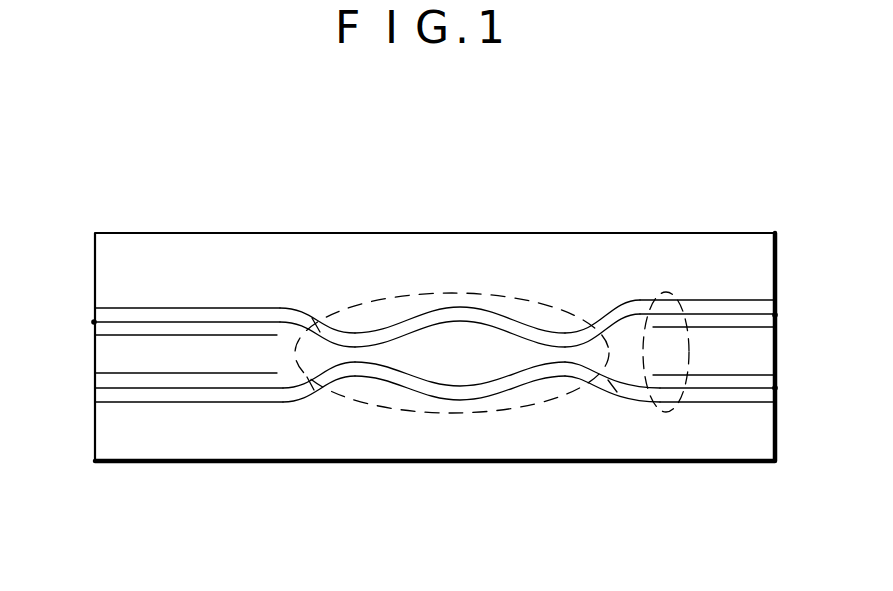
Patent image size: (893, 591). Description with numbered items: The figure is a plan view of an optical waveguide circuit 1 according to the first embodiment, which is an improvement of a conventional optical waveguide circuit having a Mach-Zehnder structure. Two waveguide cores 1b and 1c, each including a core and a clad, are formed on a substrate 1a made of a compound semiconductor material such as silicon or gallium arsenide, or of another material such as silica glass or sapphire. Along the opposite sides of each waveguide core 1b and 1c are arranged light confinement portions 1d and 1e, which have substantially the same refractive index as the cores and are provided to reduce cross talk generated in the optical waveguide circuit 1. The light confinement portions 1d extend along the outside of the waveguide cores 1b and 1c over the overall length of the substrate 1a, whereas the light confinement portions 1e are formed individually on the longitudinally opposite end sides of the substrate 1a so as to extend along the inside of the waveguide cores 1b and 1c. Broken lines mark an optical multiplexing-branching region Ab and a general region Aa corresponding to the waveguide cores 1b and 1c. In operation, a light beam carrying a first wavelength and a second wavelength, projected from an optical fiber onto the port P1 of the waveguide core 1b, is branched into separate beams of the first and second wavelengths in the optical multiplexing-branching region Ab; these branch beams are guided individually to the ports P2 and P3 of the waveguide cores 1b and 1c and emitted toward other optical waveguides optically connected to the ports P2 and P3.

The optical waveguide circuit 1 is at (423, 212).
The substrate 1a is at (492, 252).
The waveguide core 1b is at (238, 320).
The waveguide core 1c is at (282, 389).
The light confinement portion 1d is at (400, 320).
The light confinement portion 1e is at (147, 335).
The general region Aa is at (663, 292).
The optical multiplexing-branching region Ab is at (483, 413).
The port P1 is at (93, 322).
The port P2 is at (777, 315).
The port P3 is at (777, 388).